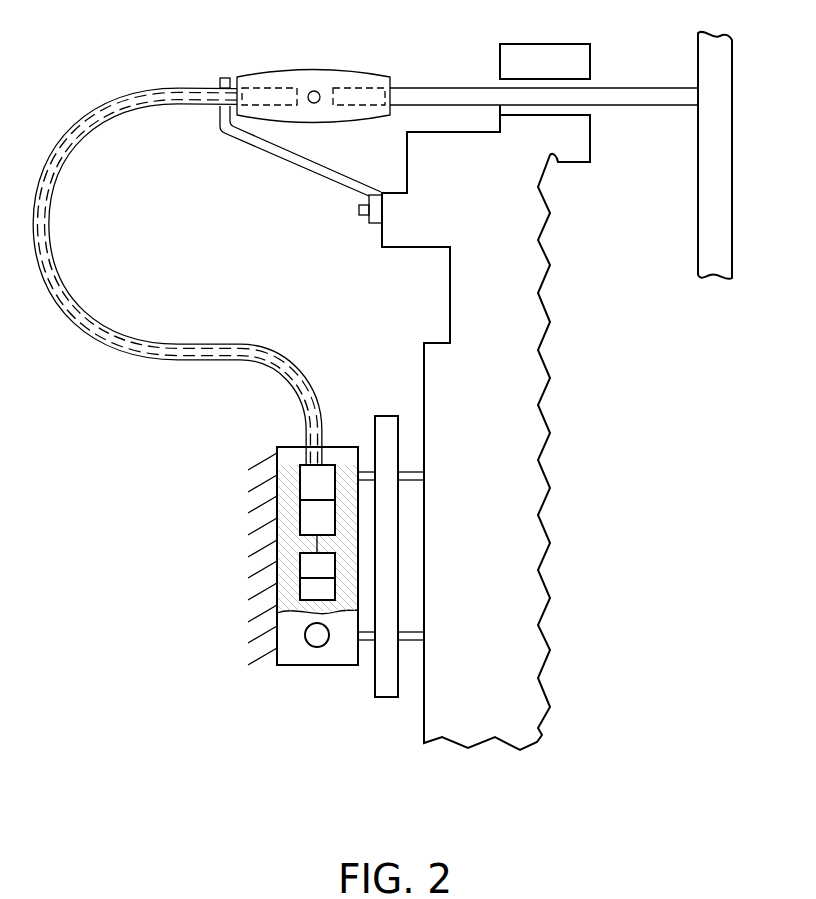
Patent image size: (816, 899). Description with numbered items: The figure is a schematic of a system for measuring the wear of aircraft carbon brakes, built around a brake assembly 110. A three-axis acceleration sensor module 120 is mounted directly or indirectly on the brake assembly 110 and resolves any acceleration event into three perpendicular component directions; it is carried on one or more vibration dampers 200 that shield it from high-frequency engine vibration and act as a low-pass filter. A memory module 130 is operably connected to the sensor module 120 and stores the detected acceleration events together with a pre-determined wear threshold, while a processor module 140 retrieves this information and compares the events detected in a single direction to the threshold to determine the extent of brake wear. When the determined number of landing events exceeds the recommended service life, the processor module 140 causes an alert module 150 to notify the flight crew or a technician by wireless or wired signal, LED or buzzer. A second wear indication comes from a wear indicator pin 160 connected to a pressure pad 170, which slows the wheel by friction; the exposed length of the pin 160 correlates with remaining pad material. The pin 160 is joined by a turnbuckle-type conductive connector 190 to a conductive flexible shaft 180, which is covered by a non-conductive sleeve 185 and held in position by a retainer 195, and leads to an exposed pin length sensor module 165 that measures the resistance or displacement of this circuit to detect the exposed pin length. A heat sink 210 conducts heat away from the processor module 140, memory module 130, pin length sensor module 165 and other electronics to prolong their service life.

The brake assembly 110 is at (532, 477).
The 3-axis acceleration sensor module 120 is at (303, 568).
The memory module 130 is at (312, 590).
The processor module 140 is at (313, 523).
The alert module 150 is at (320, 643).
The wear indicator pin 160 is at (627, 95).
The exposed pin length sensor module 165 is at (315, 475).
The pressure pad 170 is at (722, 128).
The conductive flexible shaft 180 is at (120, 338).
The non-conductive sleeve 185 is at (62, 303).
The conductive connector 190 is at (313, 91).
The retainer 195 is at (263, 151).
The vibration dampers 200 is at (410, 642).
The heat sink 210 is at (288, 482).